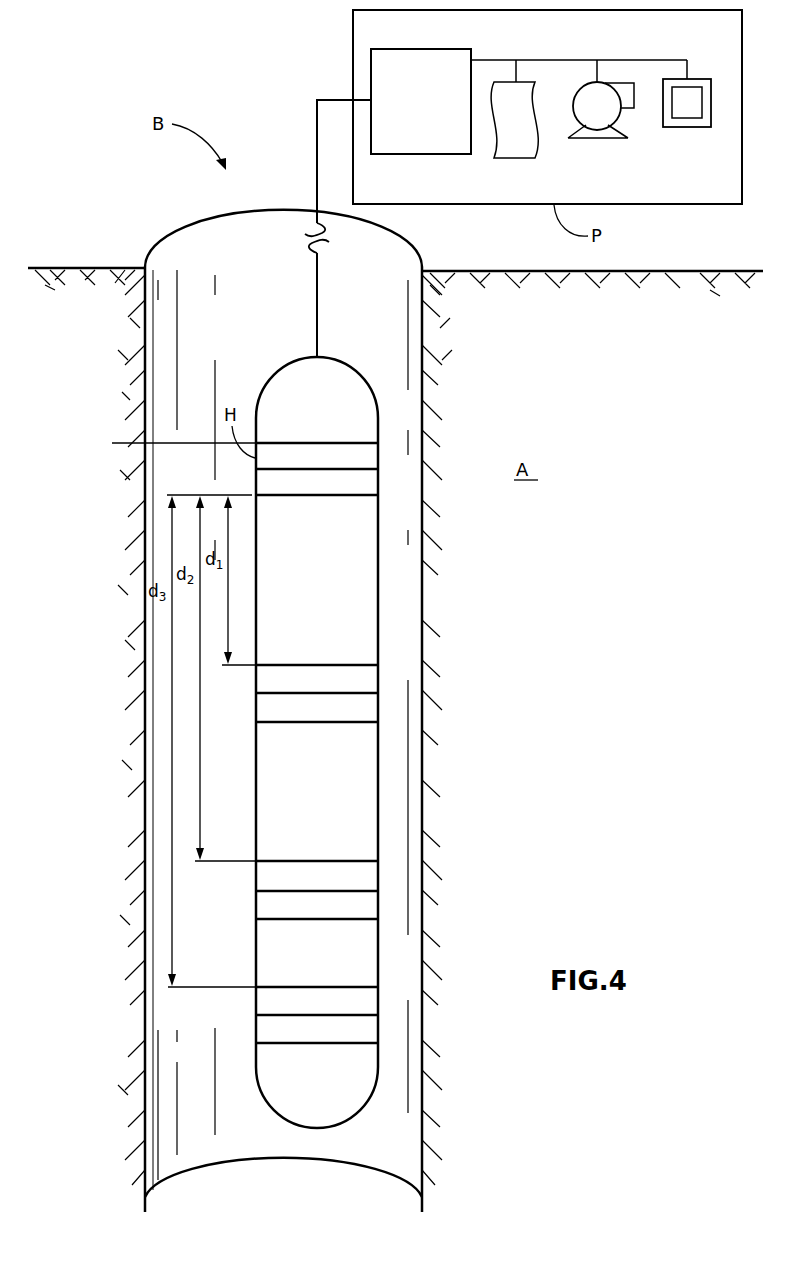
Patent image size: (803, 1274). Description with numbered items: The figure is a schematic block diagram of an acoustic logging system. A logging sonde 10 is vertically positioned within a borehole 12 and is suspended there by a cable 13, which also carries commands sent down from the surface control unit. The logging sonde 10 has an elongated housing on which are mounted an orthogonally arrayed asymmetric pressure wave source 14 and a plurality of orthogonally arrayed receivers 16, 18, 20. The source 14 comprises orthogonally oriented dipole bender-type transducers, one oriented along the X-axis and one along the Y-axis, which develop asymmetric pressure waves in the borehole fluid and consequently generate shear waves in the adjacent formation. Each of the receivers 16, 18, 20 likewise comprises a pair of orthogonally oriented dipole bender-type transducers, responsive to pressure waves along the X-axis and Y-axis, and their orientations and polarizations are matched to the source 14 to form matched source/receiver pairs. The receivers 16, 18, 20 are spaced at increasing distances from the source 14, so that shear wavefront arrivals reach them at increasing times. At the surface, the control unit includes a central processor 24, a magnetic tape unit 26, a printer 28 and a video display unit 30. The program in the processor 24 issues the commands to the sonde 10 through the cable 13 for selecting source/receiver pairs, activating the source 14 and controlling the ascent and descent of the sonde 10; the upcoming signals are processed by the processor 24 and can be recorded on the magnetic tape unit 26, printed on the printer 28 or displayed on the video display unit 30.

The logging sonde 10 is at (365, 366).
The borehole 12 is at (238, 337).
The cable 13 is at (317, 136).
The asymmetric pressure wave source 14 is at (296, 443).
The receiver 16 is at (312, 665).
The receiver 18 is at (345, 861).
The receiver 20 is at (345, 987).
The central processor 24 is at (405, 52).
The magnetic tape unit 26 is at (536, 108).
The printer 28 is at (600, 140).
The video display unit 30 is at (694, 79).